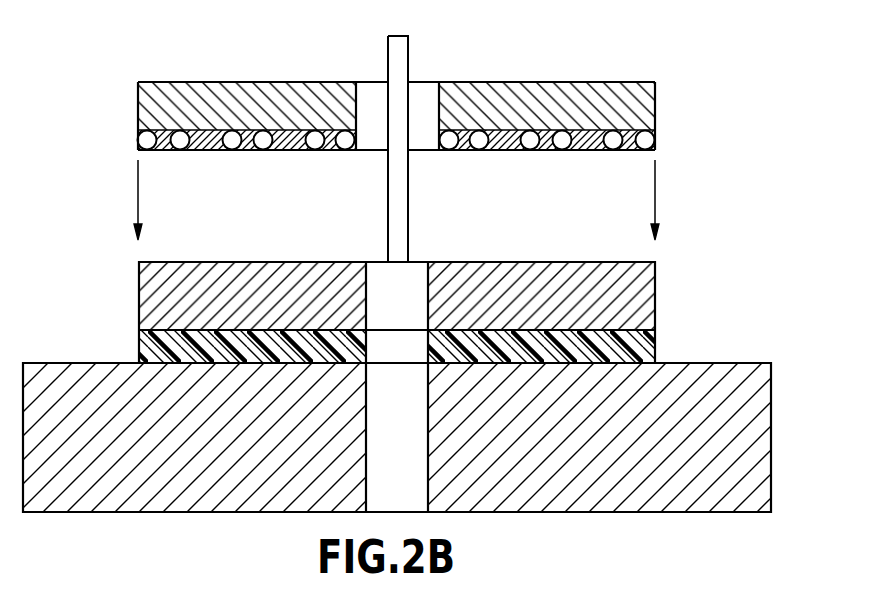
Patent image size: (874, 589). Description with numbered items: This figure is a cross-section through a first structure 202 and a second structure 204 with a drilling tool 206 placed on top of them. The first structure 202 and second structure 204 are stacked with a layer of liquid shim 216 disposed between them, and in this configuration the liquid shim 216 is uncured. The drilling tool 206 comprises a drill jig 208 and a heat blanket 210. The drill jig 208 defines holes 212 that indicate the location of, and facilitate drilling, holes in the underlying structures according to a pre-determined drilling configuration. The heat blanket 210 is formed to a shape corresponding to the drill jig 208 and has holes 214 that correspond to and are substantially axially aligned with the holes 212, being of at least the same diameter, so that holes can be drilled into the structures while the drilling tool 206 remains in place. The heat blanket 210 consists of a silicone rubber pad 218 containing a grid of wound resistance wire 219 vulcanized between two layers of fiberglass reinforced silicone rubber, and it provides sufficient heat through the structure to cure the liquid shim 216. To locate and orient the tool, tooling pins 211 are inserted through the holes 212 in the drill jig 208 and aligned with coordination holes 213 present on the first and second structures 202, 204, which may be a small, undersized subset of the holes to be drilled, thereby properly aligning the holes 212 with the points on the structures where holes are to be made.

The first structure 202 is at (771, 405).
The second structure 204 is at (657, 295).
The drilling tool 206 is at (668, 121).
The drill jig 208 is at (657, 83).
The heat blanket 210 is at (657, 150).
The tooling pins 211 is at (408, 67).
The holes 212 is at (368, 83).
The coordination holes 213 is at (409, 293).
The holes 214 is at (360, 152).
The liquid shim 216 is at (140, 353).
The silicone rubber pad 218 is at (207, 150).
The wound resistance wire 219 is at (217, 133).